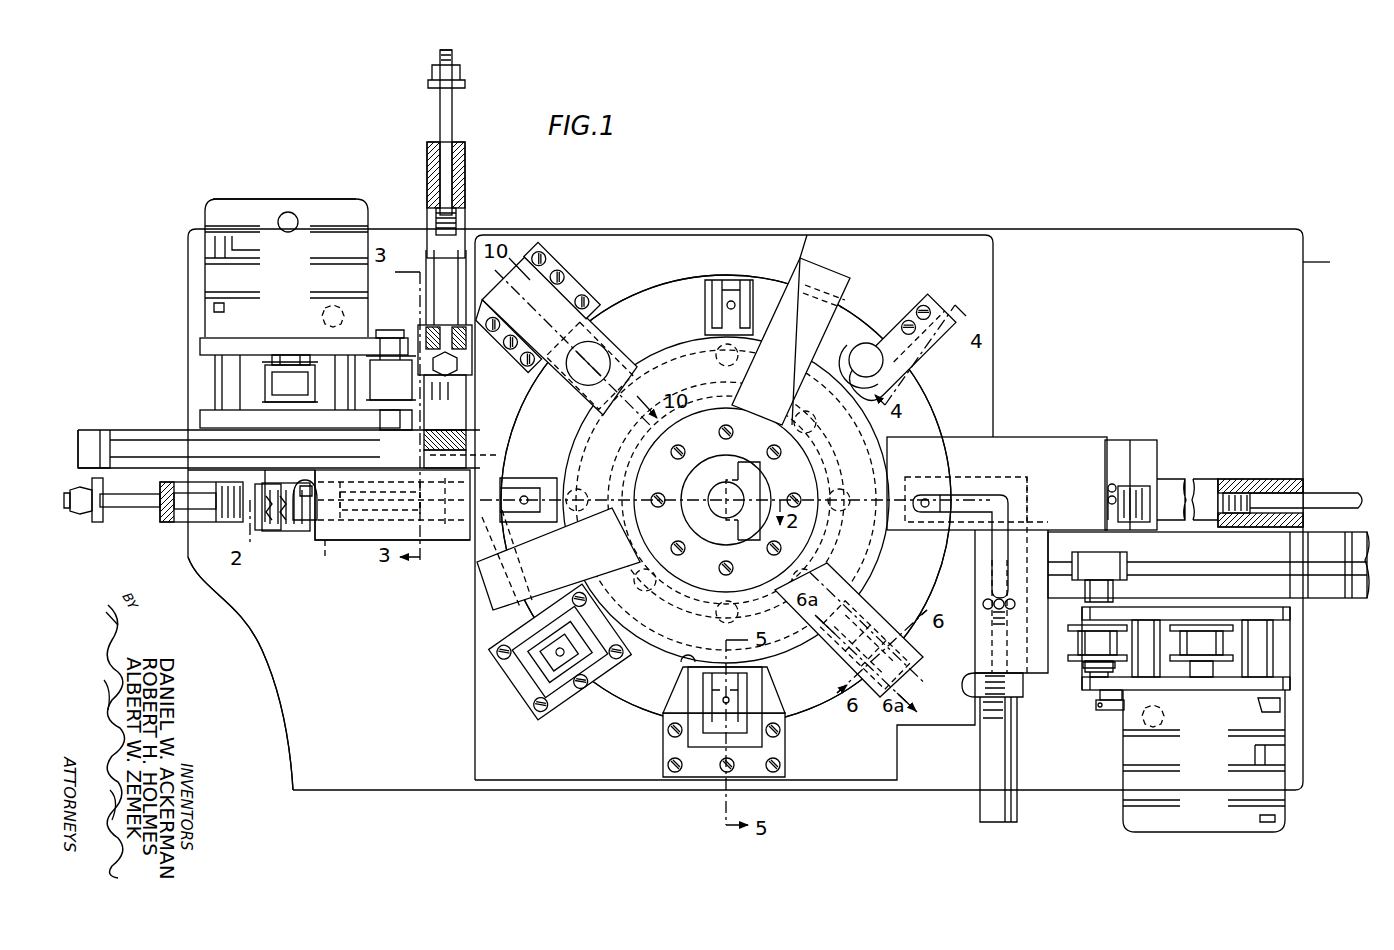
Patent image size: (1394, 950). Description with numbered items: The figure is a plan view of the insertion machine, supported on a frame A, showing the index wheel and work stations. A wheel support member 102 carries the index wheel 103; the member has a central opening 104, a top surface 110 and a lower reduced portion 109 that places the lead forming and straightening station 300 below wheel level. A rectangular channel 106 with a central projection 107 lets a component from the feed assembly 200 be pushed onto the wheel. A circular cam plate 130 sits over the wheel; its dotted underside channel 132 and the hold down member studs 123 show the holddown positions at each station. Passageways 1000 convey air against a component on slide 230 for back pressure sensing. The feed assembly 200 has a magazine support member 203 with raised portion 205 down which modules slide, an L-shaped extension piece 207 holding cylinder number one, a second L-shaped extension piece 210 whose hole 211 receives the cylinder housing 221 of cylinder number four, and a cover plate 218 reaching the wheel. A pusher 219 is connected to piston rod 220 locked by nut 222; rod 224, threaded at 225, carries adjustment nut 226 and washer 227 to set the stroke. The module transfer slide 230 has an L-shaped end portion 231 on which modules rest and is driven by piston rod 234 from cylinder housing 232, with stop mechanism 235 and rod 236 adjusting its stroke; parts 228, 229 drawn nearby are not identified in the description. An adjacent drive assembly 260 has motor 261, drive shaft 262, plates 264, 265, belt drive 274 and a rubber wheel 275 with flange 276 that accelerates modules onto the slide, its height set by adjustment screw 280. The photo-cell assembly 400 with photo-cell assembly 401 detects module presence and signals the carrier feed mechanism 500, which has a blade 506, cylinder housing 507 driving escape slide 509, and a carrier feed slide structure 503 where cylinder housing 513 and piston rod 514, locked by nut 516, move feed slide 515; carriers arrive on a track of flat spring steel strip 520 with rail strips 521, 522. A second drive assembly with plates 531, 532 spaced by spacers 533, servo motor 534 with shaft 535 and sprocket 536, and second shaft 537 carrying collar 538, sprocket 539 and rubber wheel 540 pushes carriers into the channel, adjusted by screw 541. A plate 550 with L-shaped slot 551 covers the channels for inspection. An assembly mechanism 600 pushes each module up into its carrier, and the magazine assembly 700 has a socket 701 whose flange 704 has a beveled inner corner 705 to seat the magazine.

The wheel support member 102 is at (935, 230).
The frame A is at (370, 790).
The top surface 110 is at (990, 258).
The reduced portion 109 is at (630, 246).
The index wheel 103 is at (683, 286).
The circular cam plate 130 is at (577, 445).
The central opening 104 is at (832, 442).
The hold down member studs 123 is at (810, 415).
The channel 132 is at (846, 520).
The lead forming and straightening station 300 is at (612, 322).
The photo-cell assembly 400 is at (932, 360).
The photo-cell assembly 401 is at (866, 343).
The channel 106 is at (525, 548).
The projection 107 is at (508, 568).
The magazine assembly 700 is at (660, 752).
The magazine socket 701 is at (764, 690).
The beveled inner corner 705 is at (748, 670).
The flange 704 is at (682, 664).
The assembly mechanism 600 is at (870, 708).
The passageways 1000 is at (500, 455).
The rod 236 is at (454, 114).
The stop mechanism 235 is at (466, 176).
The cylinder housing 232 is at (458, 240).
The piston rod 234 is at (462, 356).
The L-shaped extension piece 207 is at (465, 372).
The module transfer slide 230 is at (466, 406).
The L-shaped end portion 231 is at (466, 438).
The drive assembly 260 is at (205, 244).
The motor 261 is at (322, 210).
The adjustment screw 280 is at (322, 317).
The second plate 265 is at (200, 348).
The plate 264 is at (200, 418).
The belt drive 274 is at (290, 378).
The drive shaft 262 is at (275, 356).
The flange 276 is at (388, 426).
The magazine support member 203 is at (128, 430).
The raised portion 205 is at (130, 452).
The rod 224 is at (166, 515).
The washer 227 is at (104, 482).
The threaded portion 225 is at (76, 514).
The adjustment nut 226 is at (80, 520).
The cylinder housing 221 is at (258, 528).
The second L-shaped extension piece 210 is at (290, 533).
The hole 211 is at (270, 530).
The piston rod 220 is at (305, 522).
The nut 222 is at (312, 486).
The feed assembly 200 is at (452, 545).
The cover plate 218 is at (345, 540).
The bore 228 is at (340, 520).
The passage 229 is at (424, 518).
The rubber wheel 275 is at (355, 462).
The pusher 219 is at (326, 560).
The plate 550 is at (1025, 437).
The feed slide 515 is at (993, 575).
The L-shaped slot 551 is at (975, 495).
The escape slide 509 is at (978, 582).
The carrier feed slide structure 503 is at (1105, 440).
The nut 516 is at (1113, 484).
The piston rod 514 is at (1130, 486).
The cylinder housing 513 is at (1195, 482).
The spring steel rail strip 522 is at (1316, 527).
The carrier feed mechanism 500 is at (1262, 445).
The spring steel rail strip 521 is at (1208, 565).
The rubber wheel 540 is at (1112, 552).
The strip of flat spring steel 520 is at (1358, 608).
The plate 531 is at (1292, 614).
The plate 532 is at (1292, 682).
The spacers 533 is at (1146, 630).
The shaft 535 is at (1200, 677).
The sprocket 536 is at (1230, 677).
The sprocket 539 is at (1083, 668).
The second shaft 537 is at (1100, 696).
The collar 538 is at (1096, 708).
The adjustment screw 541 is at (1140, 718).
The servo motor 534 is at (1285, 810).
The blade 506 is at (978, 720).
The cylinder housing 507 is at (1020, 812).